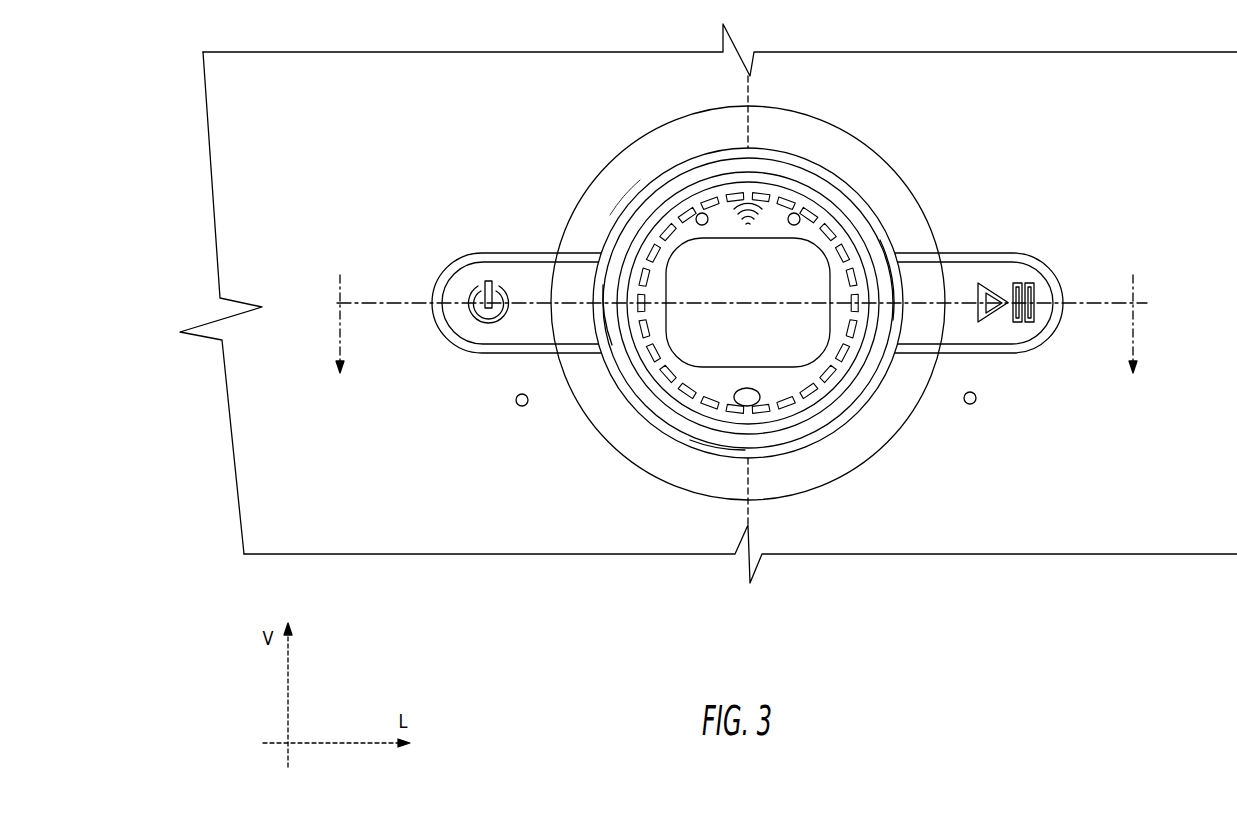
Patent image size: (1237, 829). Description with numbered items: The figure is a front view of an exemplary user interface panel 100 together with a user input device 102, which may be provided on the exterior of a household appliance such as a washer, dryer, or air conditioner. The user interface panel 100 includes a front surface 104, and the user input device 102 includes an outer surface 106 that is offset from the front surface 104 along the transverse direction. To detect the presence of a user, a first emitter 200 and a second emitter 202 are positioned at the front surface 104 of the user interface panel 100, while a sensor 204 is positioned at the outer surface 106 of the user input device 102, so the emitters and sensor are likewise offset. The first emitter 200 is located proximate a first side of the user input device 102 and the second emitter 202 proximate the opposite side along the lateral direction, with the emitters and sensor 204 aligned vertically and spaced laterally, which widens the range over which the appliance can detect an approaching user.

The user interface panel 100 is at (873, 72).
The user input device 102 is at (633, 237).
The front surface 104 is at (1104, 117).
The outer surface 106 is at (763, 339).
The first emitter 200 is at (521, 406).
The second emitter 202 is at (968, 404).
The sensor 204 is at (759, 396).